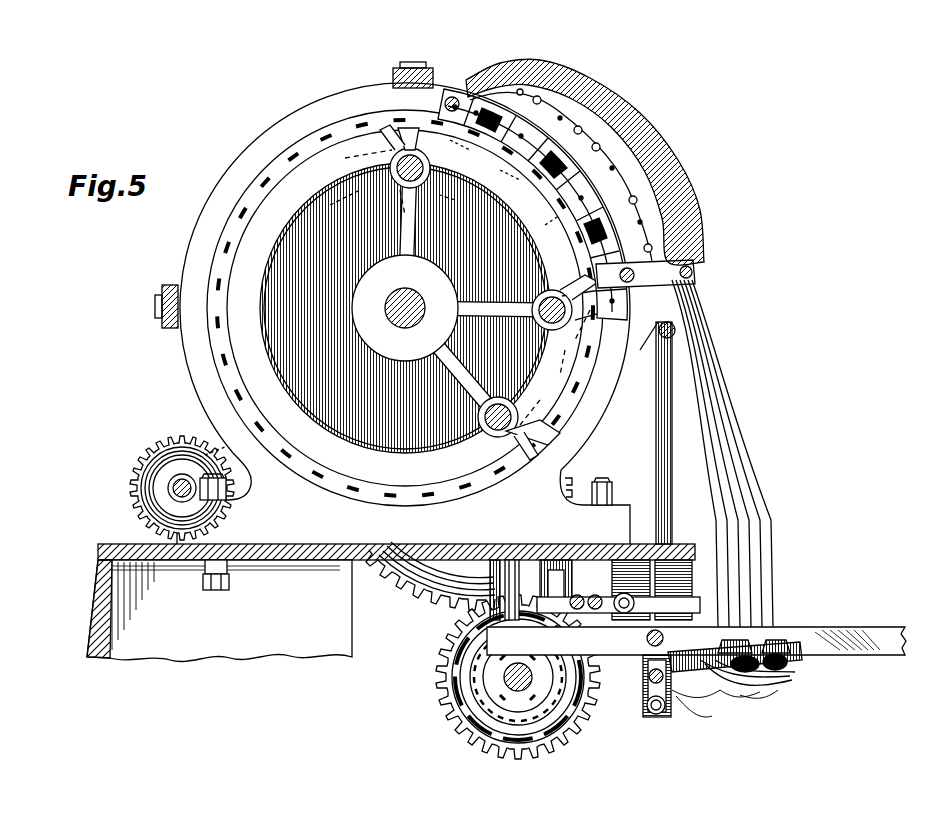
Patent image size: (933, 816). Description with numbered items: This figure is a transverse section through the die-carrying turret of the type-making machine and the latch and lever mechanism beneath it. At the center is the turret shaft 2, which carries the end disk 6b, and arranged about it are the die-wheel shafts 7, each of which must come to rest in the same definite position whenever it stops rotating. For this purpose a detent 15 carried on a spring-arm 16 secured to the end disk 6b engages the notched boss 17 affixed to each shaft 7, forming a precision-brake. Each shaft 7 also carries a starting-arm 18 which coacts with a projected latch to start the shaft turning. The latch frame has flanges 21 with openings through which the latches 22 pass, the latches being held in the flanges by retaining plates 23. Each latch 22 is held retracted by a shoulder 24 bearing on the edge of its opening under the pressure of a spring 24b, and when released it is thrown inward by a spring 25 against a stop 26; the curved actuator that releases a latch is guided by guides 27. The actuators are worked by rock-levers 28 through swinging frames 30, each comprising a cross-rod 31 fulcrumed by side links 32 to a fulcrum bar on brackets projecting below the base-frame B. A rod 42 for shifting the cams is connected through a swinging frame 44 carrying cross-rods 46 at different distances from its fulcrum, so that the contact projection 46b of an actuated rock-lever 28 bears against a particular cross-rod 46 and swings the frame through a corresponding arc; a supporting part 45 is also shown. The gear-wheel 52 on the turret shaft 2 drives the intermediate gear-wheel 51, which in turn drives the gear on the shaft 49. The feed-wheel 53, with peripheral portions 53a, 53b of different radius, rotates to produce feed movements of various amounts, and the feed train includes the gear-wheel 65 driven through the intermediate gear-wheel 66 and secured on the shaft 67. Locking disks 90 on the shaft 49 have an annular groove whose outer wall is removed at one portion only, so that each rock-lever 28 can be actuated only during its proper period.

The shaft 2 is at (426, 305).
The end disk 6b is at (240, 272).
The die-wheel shaft 7 is at (393, 162).
The detent 15 is at (410, 128).
The spring-arm 16 is at (478, 500).
The boss 17 is at (456, 287).
The starting-arm 18 is at (398, 150).
The flange 21 is at (543, 87).
The latch 22 is at (556, 96).
The retaining plate 23 is at (630, 124).
The shoulder 24 is at (560, 76).
The spring 24b is at (585, 92).
The spring 25 is at (536, 182).
The stop 26 is at (541, 180).
The guide 27 is at (545, 92).
The rock-lever 28 is at (858, 637).
The swinging frame 30 is at (715, 721).
The cross-rod 31 is at (618, 404).
The side link 32 is at (712, 660).
The rod 42 is at (656, 459).
The swinging frame 44 is at (560, 598).
The bracket 45 is at (630, 570).
The cross-rod 46 is at (572, 612).
The contact projection 46b is at (592, 575).
The shaft 49 is at (506, 672).
The intermediate gear-wheel 51 is at (420, 606).
The gear-wheel 52 is at (475, 295).
The feed-wheel 53 is at (362, 190).
The peripheral portion of feed-wheel 53a is at (345, 210).
The peripheral portion of feed-wheel 53b is at (672, 132).
The gear-wheel 65 is at (175, 486).
The intermediate gear-wheel 66 is at (224, 448).
The shaft 67 is at (214, 502).
The locking disk 90 is at (472, 714).
The base-frame B is at (391, 603).